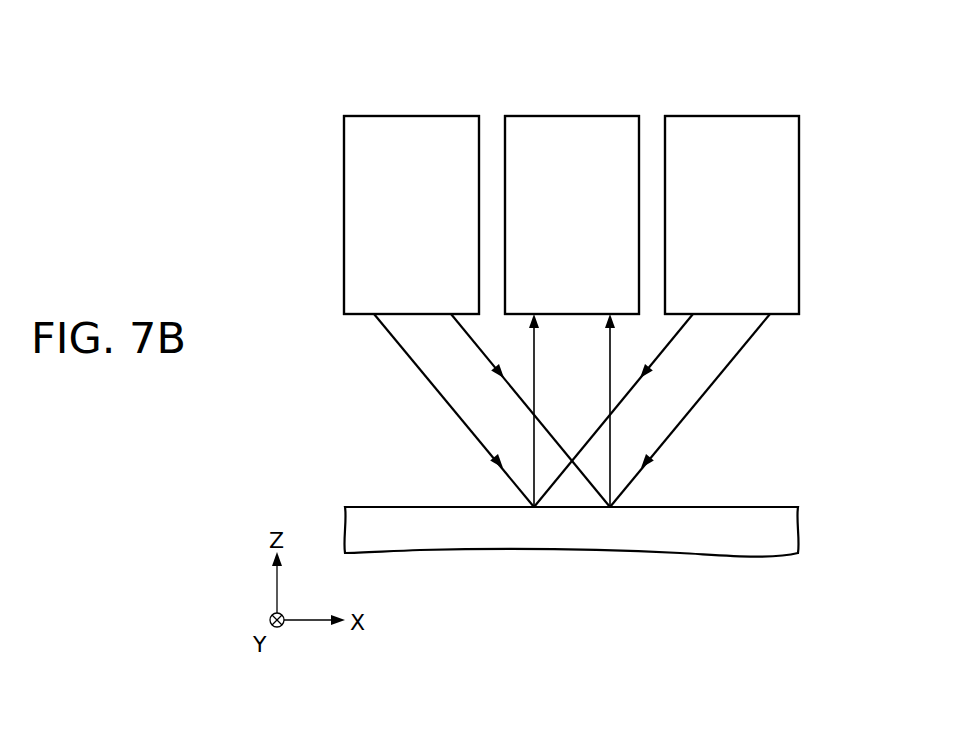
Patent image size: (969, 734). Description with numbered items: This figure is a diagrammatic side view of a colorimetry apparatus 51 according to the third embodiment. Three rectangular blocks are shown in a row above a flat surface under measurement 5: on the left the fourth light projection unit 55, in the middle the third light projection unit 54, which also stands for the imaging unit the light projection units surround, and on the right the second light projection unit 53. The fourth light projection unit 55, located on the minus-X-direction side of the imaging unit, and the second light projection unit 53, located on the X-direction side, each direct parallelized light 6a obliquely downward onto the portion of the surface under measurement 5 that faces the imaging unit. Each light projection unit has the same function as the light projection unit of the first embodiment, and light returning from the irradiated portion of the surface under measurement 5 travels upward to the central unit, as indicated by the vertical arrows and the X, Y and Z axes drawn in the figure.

The colorimetry apparatus 51 is at (789, 69).
The fourth light projection unit 55 is at (418, 132).
The third light projection unit 54 is at (582, 132).
The second light projection unit 53 is at (740, 132).
The parallelized light 6a is at (487, 366).
The surface under measurement 5 is at (742, 506).